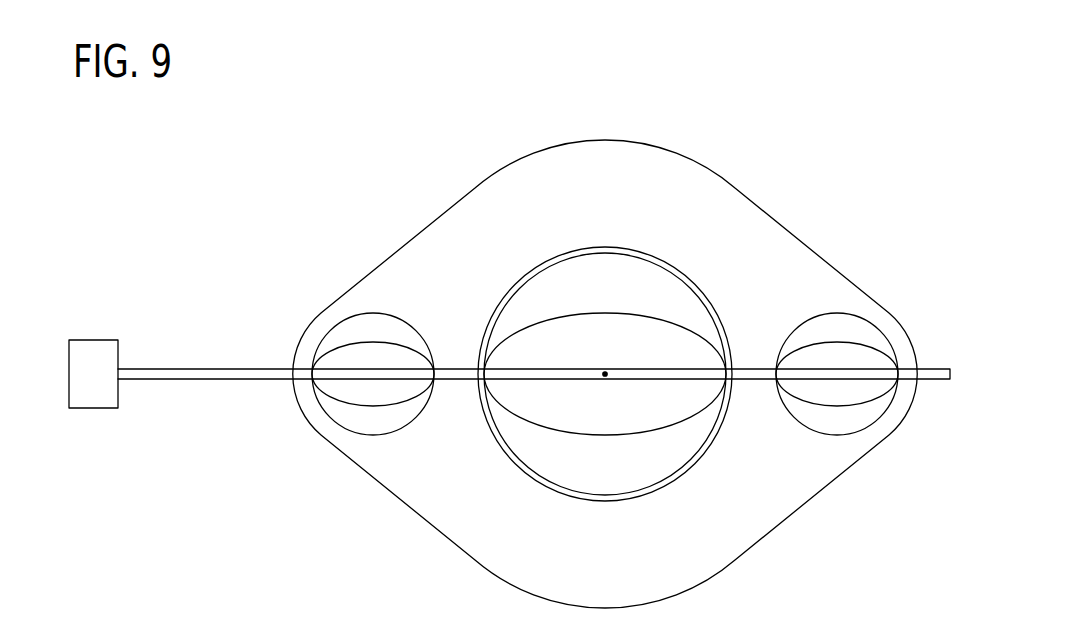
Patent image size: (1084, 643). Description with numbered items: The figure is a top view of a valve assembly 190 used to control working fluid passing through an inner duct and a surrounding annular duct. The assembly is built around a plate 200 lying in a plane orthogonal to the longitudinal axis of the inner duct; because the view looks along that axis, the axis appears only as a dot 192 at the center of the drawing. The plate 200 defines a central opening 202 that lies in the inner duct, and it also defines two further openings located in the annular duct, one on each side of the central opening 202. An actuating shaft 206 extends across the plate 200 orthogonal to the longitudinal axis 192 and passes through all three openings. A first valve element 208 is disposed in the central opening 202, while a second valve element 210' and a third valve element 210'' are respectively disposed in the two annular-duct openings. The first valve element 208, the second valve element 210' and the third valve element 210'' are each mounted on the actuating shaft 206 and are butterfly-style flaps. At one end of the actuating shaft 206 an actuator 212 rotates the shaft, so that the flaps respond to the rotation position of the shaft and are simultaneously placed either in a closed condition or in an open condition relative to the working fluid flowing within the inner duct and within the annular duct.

The valve assembly 190 is at (624, 111).
The longitudinal axis 192 is at (606, 377).
The plate 200 is at (440, 237).
The central opening 202 is at (538, 453).
The actuating shaft 206 is at (182, 375).
The first valve element 208 is at (597, 332).
The second valve element 210' is at (859, 338).
The third valve element 210'' is at (352, 340).
The actuator 212 is at (93, 355).